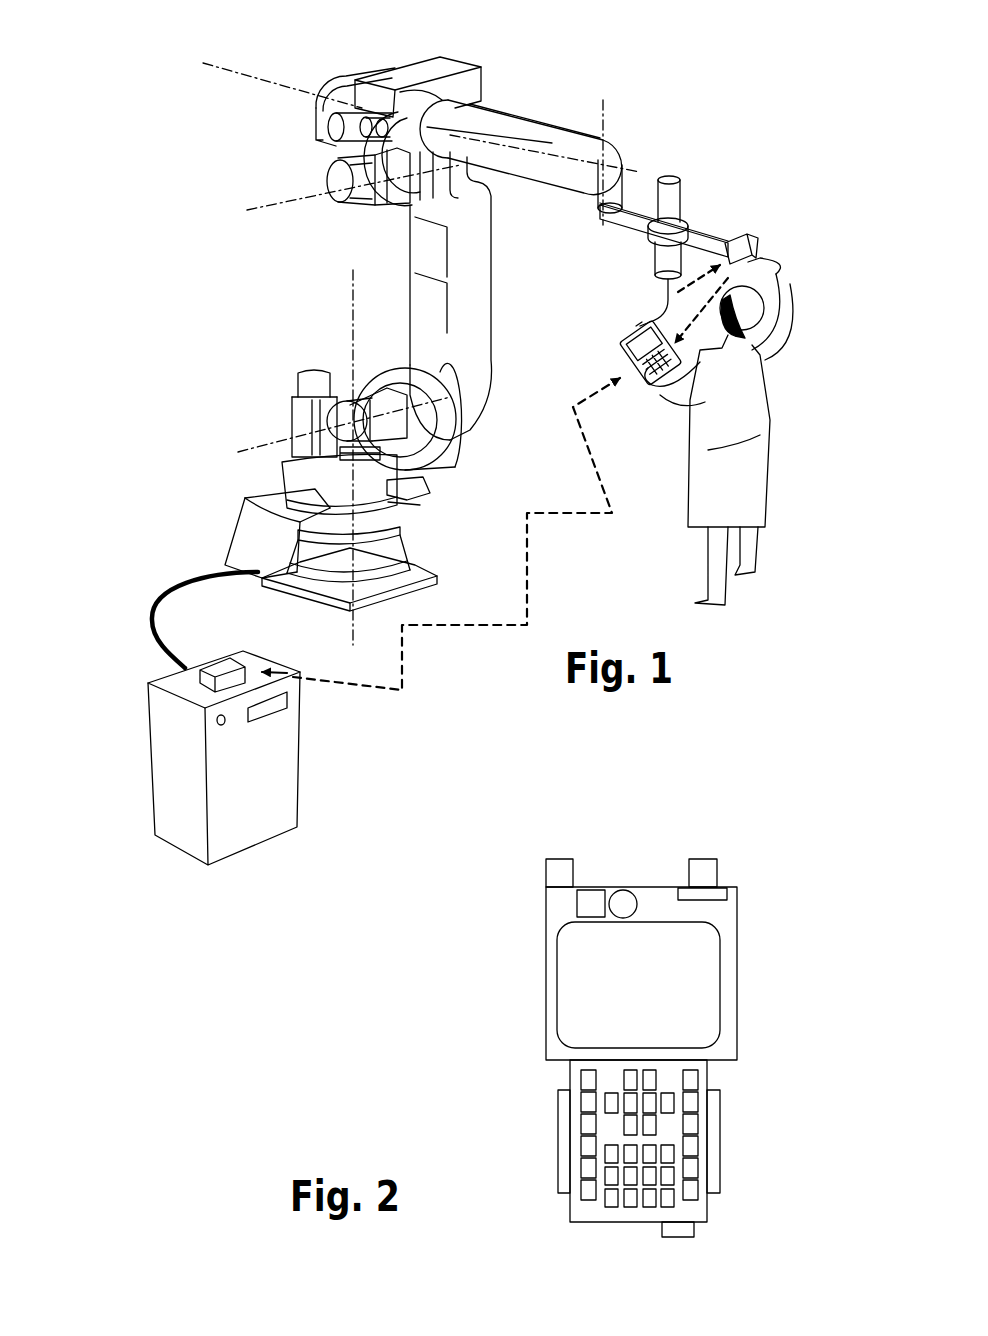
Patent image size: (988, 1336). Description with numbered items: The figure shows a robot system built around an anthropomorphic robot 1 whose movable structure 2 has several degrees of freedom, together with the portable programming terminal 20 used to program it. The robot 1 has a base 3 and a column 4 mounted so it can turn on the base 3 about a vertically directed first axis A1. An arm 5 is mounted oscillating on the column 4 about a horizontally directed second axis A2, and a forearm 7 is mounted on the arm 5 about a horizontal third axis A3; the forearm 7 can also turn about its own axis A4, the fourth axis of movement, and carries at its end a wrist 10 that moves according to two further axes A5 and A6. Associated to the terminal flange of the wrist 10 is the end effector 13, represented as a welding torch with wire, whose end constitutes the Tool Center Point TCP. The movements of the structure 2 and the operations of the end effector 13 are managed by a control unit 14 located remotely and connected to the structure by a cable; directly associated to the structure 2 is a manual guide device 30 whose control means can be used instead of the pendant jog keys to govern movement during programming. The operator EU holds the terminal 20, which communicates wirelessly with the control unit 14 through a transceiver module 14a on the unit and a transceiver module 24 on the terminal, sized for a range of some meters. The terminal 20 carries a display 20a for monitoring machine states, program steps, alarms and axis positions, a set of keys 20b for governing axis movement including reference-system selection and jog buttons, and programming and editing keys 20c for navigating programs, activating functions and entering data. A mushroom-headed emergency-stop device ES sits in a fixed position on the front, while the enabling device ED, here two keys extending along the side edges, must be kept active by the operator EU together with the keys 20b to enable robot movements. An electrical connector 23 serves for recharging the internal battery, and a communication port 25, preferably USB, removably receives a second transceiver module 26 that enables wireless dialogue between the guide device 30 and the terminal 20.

In FIG. 1, the robot 1 is at (148, 300).
In FIG. 1, the structure 2 is at (388, 262).
In FIG. 1, the base 3 is at (253, 557).
In FIG. 1, the column 4 is at (407, 453).
In FIG. 1, the arm 5 is at (478, 272).
In FIG. 1, the forearm 7 is at (498, 118).
In FIG. 1, the wrist 10 is at (625, 180).
In FIG. 1, the end effector 13 is at (692, 203).
In FIG. 1, the manual guide device 30 is at (746, 230).
In FIG. 1, the control unit 14 is at (145, 730).
In FIG. 1, the transceiver module 14a is at (220, 668).
In FIG. 1, the portable programming terminal 20 is at (622, 343).
In FIG. 2, the portable programming terminal 20 is at (505, 925).
In FIG. 2, the display 20a is at (590, 1005).
In FIG. 2, the keys for governing axis movement 20b is at (630, 1103).
In FIG. 2, the programming and editing keys 20c is at (650, 1175).
In FIG. 2, the electrical connector 23 is at (678, 1232).
In FIG. 2, the transceiver module 24 is at (556, 872).
In FIG. 2, the communication port 25 is at (705, 896).
In FIG. 2, the second transceiver module 26 is at (702, 866).
In FIG. 1, the first axis A1 is at (350, 333).
In FIG. 1, the second axis A2 is at (262, 443).
In FIG. 1, the third axis A3 is at (285, 205).
In FIG. 1, the fourth axis A4 is at (262, 78).
In FIG. 1, the fifth axis A5 is at (612, 112).
In FIG. 1, the sixth axis A6 is at (553, 187).
In FIG. 1, the Tool Center Point TCP is at (630, 323).
In FIG. 1, the operator EU is at (740, 400).
In FIG. 2, the emergency-stop device ES is at (624, 904).
In FIG. 2, the enabling device ED is at (562, 1160).